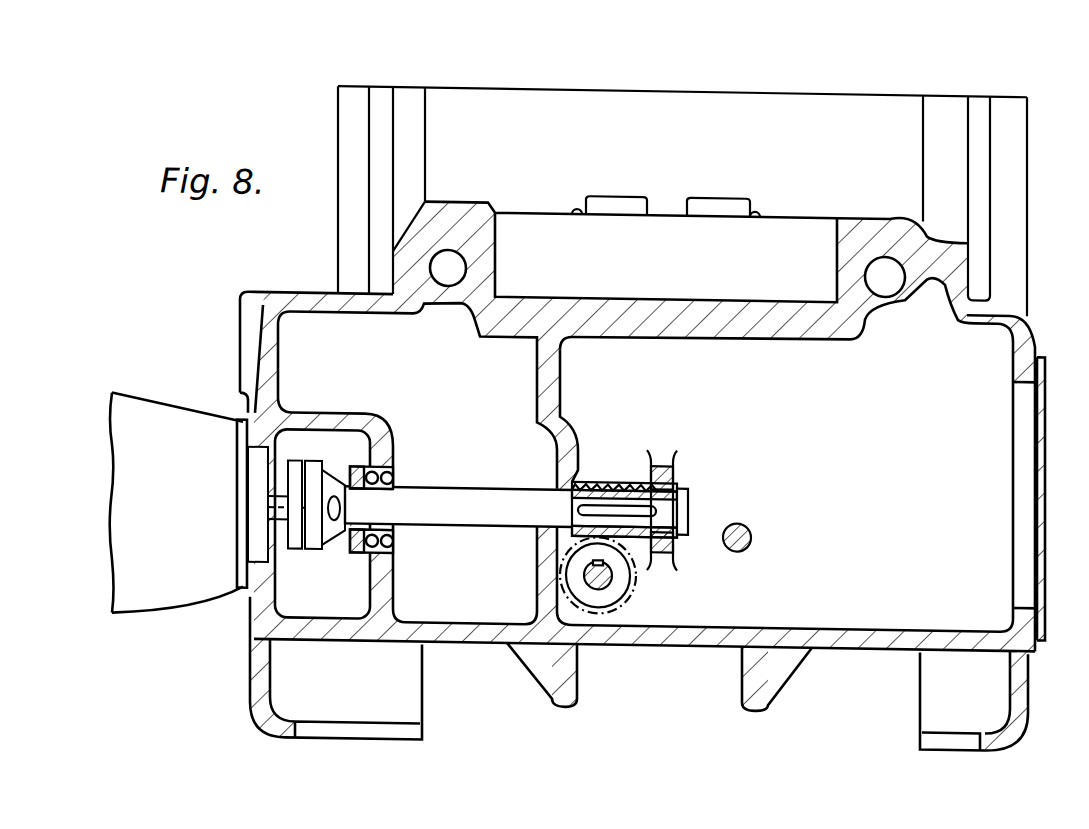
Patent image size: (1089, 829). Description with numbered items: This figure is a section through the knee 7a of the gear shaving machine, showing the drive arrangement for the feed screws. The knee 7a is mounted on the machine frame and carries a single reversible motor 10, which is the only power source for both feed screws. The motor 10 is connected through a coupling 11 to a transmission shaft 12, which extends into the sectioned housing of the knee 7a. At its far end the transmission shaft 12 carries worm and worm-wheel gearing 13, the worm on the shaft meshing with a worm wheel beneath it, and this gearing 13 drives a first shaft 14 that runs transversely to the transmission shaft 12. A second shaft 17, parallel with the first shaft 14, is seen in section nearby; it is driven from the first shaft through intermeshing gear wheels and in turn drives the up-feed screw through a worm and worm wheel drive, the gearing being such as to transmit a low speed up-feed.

The knee 7a is at (305, 302).
The reversible motor 10 is at (176, 521).
The coupling 11 is at (313, 547).
The transmission shaft 12 is at (473, 502).
The worm and worm-wheel gearing 13 is at (596, 479).
The first shaft 14 is at (615, 571).
The second shaft 17 is at (745, 527).